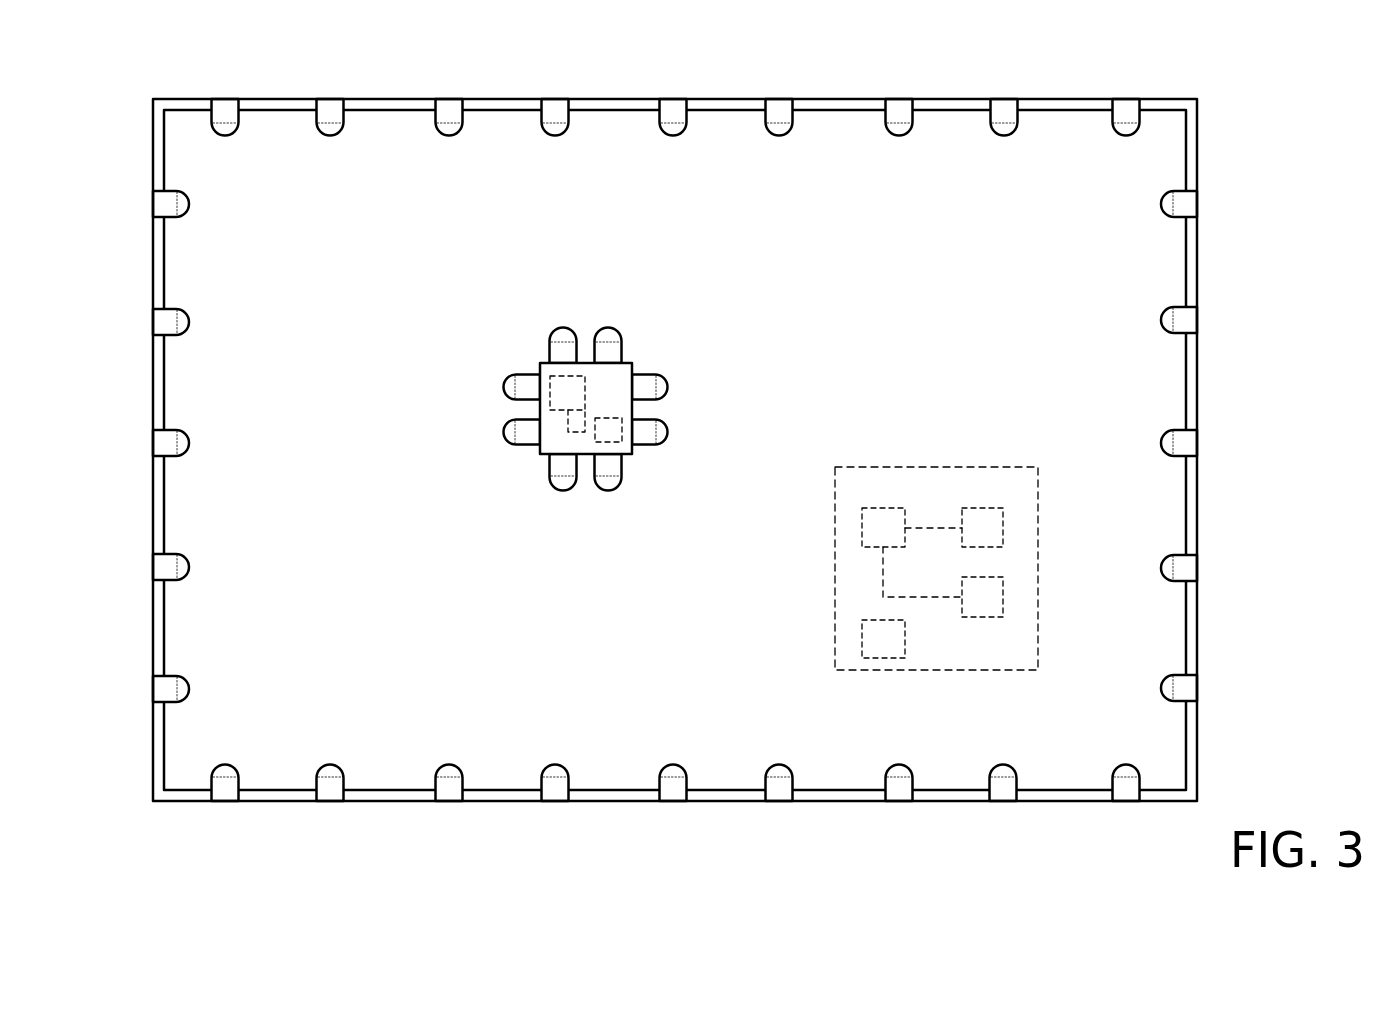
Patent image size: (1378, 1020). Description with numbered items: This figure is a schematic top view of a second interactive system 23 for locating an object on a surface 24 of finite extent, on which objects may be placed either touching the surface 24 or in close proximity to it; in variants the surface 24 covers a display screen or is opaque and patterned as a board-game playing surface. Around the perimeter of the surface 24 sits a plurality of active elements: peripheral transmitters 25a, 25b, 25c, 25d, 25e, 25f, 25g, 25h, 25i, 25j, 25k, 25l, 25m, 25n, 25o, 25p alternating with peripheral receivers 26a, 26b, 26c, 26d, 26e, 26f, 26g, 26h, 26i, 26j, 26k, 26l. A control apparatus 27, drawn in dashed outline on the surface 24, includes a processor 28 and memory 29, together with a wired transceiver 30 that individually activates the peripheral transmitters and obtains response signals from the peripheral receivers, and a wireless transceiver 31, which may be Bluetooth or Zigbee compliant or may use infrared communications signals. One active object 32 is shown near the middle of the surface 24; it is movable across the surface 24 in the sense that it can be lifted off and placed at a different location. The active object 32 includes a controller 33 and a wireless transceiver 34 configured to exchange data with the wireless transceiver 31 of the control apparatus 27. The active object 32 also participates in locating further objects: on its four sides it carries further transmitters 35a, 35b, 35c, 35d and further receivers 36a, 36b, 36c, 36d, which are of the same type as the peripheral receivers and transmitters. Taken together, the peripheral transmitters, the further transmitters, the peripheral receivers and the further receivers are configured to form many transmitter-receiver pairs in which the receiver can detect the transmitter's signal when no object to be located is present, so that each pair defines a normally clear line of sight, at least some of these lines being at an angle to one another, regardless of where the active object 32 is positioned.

The second interactive system 23 is at (1249, 94).
The surface 24 is at (884, 320).
The peripheral transmitter 25a is at (227, 120).
The peripheral transmitter 25b is at (451, 120).
The peripheral transmitter 25c is at (675, 120).
The peripheral transmitter 25d is at (901, 120).
The peripheral transmitter 25e is at (1128, 120).
The peripheral transmitter 25f is at (1181, 205).
The peripheral transmitter 25g is at (1181, 444).
The peripheral transmitter 25h is at (1181, 689).
The peripheral transmitter 25i is at (1127, 788).
The peripheral transmitter 25j is at (900, 788).
The peripheral transmitter 25k is at (674, 788).
The peripheral transmitter 25l is at (450, 788).
The peripheral transmitter 25m is at (226, 788).
The peripheral transmitter 25n is at (172, 690).
The peripheral transmitter 25o is at (172, 444).
The peripheral transmitter 25p is at (172, 205).
The peripheral receiver 26a is at (332, 120).
The peripheral receiver 26b is at (557, 120).
The peripheral receiver 26c is at (781, 120).
The peripheral receiver 26d is at (1006, 120).
The peripheral receiver 26e is at (1181, 321).
The peripheral receiver 26f is at (1181, 569).
The peripheral receiver 26g is at (1004, 788).
The peripheral receiver 26h is at (780, 788).
The peripheral receiver 26i is at (556, 788).
The peripheral receiver 26j is at (331, 788).
The peripheral receiver 26k is at (172, 568).
The peripheral receiver 26l is at (172, 323).
The control apparatus 27 is at (936, 538).
The processor 28 is at (871, 539).
The memory 29 is at (970, 539).
The wired transceiver 30 is at (970, 608).
The wireless transceiver 31 is at (871, 650).
The active object 32 is at (587, 409).
The controller 33 is at (567, 376).
The wireless transceiver 34 is at (609, 443).
The further transmitter 35a is at (563, 340).
The further transmitter 35b is at (656, 387).
The further transmitter 35c is at (606, 478).
The further transmitter 35d is at (517, 432).
The further receiver 36a is at (611, 340).
The further receiver 36b is at (656, 432).
The further receiver 36c is at (563, 478).
The further receiver 36d is at (517, 387).